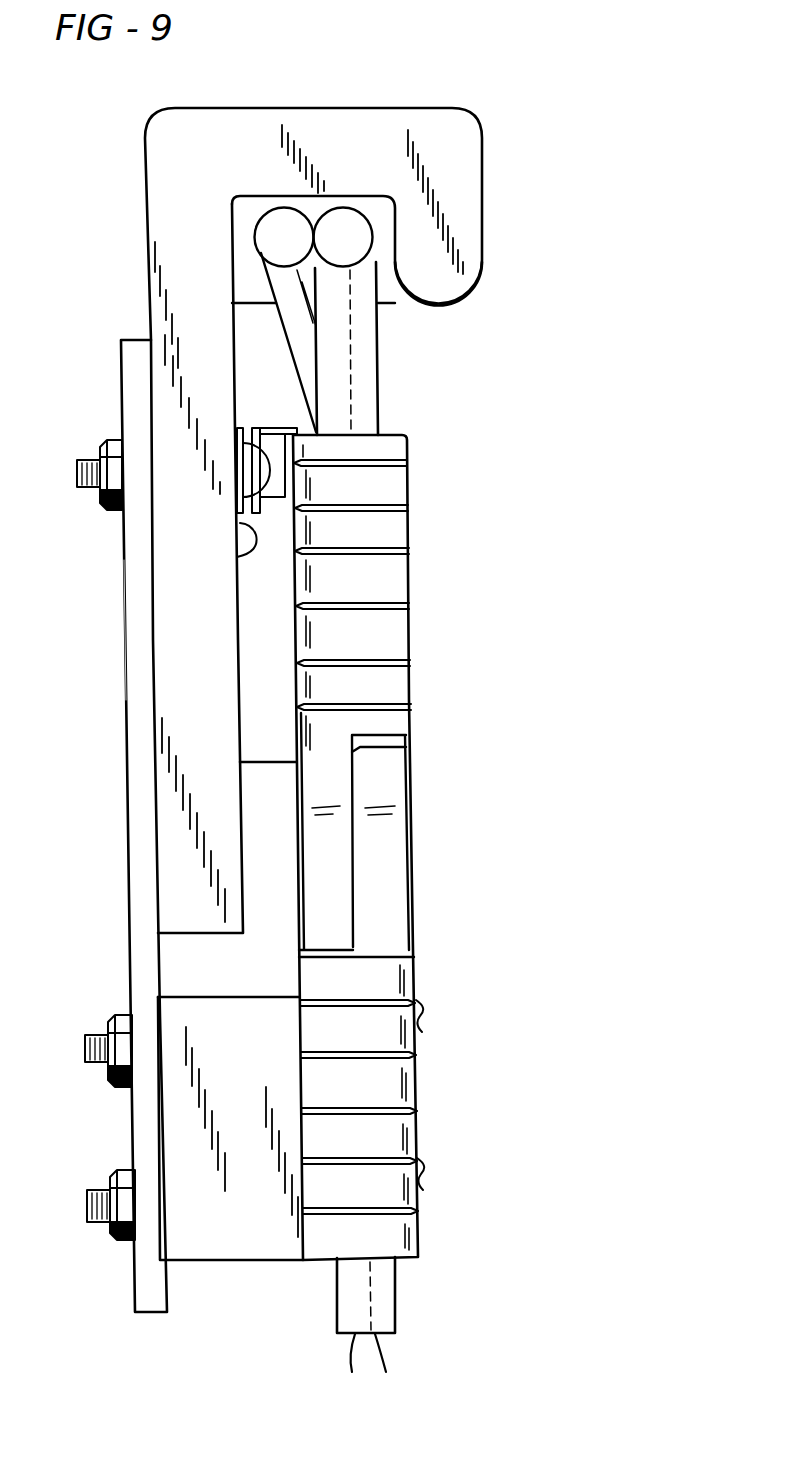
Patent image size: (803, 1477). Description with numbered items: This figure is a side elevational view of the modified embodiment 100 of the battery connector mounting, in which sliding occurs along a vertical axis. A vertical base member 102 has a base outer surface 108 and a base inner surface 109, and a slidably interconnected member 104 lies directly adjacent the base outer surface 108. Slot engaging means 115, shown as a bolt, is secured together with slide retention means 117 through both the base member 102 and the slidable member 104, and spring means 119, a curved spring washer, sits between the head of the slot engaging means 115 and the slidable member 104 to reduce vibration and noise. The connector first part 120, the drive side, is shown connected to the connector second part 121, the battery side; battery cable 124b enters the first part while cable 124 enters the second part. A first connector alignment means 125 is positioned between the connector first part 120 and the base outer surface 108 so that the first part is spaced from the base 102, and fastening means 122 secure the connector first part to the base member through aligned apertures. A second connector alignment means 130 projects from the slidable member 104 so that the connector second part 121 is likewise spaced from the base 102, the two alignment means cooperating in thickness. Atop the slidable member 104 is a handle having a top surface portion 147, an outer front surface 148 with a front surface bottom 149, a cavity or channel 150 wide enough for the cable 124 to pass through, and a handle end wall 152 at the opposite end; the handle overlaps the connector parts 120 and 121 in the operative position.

The modified embodiment 100 is at (147, 241).
The vertical base member 102 is at (138, 780).
The slidably interconnected member 104 is at (166, 305).
The base outer surface 108 is at (162, 972).
The base inner surface 109 is at (127, 966).
The slot engaging means 115 is at (275, 455).
The slide retention means 117 is at (106, 442).
The spring means 119 is at (237, 557).
The connector first part 120 is at (388, 1127).
The connector second part 121 is at (392, 757).
The fastening means 122 is at (420, 1005).
The cable 124 is at (356, 325).
The battery cable 124b is at (385, 1275).
The first connector alignment means 125 is at (235, 1248).
The second connector alignment means 130 is at (248, 706).
The top surface portion 147 is at (390, 124).
The outer front surface 148 is at (484, 187).
The front surface bottom 149 is at (453, 303).
The cavity or channel 150 is at (246, 206).
The handle end wall 152 is at (247, 277).